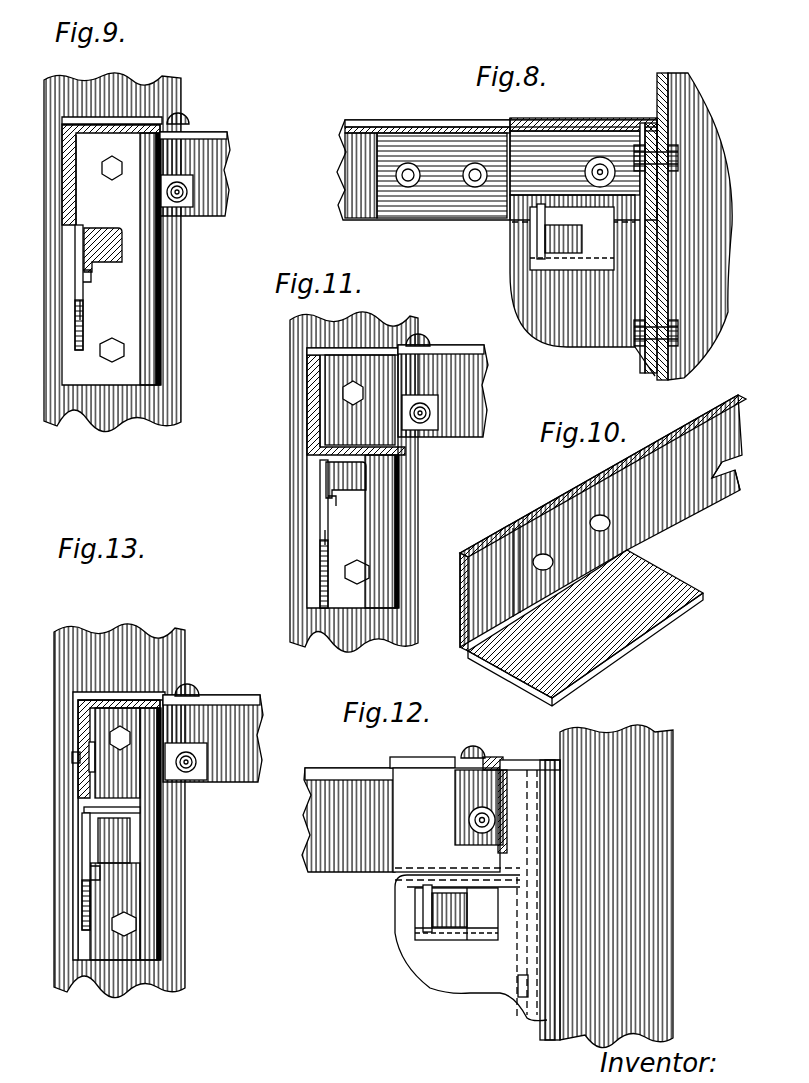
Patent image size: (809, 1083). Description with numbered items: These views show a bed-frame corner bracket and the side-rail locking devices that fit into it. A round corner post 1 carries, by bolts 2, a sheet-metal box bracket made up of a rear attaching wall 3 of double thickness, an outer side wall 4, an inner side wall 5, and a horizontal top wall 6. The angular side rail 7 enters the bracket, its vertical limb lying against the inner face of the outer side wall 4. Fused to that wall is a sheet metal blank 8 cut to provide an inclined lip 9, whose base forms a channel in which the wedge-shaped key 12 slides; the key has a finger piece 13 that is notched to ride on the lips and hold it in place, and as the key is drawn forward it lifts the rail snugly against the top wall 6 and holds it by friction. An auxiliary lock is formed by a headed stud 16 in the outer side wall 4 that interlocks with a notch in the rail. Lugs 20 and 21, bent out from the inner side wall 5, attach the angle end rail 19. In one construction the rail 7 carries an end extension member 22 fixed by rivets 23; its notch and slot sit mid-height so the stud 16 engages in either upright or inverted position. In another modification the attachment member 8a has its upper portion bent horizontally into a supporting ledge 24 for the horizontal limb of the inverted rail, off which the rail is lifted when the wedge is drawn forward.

In FIG. 9, the corner post 1 is at (50, 318).
In FIG. 8, the corner post 1 is at (690, 195).
In FIG. 11, the corner post 1 is at (302, 524).
In FIG. 13, the corner post 1 is at (58, 678).
In FIG. 12, the corner post 1 is at (628, 812).
In FIG. 9, the bolts 2 is at (113, 176).
In FIG. 8, the bolts 2 is at (656, 245).
In FIG. 11, the bolts 2 is at (354, 380).
In FIG. 13, the bolts 2 is at (120, 750).
In FIG. 9, the rear attaching wall 3 is at (130, 297).
In FIG. 8, the rear attaching wall 3 is at (650, 272).
In FIG. 11, the rear attaching wall 3 is at (372, 505).
In FIG. 13, the rear attaching wall 3 is at (142, 900).
In FIG. 12, the rear attaching wall 3 is at (526, 905).
In FIG. 9, the outer side wall 4 is at (74, 283).
In FIG. 11, the outer side wall 4 is at (318, 498).
In FIG. 13, the outer side wall 4 is at (84, 860).
In FIG. 12, the outer side wall 4 is at (446, 820).
In FIG. 9, the inner side wall 5 is at (160, 262).
In FIG. 8, the inner side wall 5 is at (640, 348).
In FIG. 11, the inner side wall 5 is at (400, 527).
In FIG. 13, the inner side wall 5 is at (162, 868).
In FIG. 8, the horizontal top wall 6 is at (617, 118).
In FIG. 13, the horizontal top wall 6 is at (100, 692).
In FIG. 12, the horizontal top wall 6 is at (418, 757).
In FIG. 9, the side rail 7 is at (140, 125).
In FIG. 8, the side rail 7 is at (370, 121).
In FIG. 11, the side rail 7 is at (358, 404).
In FIG. 10, the side rail 7 is at (463, 648).
In FIG. 13, the side rail 7 is at (118, 700).
In FIG. 12, the side rail 7 is at (330, 770).
In FIG. 9, the sheet metal blank 8 is at (82, 305).
In FIG. 8, the sheet metal blank 8 is at (568, 300).
In FIG. 12, the sheet metal blank 8 is at (471, 948).
In FIG. 11, the attachment member 8a is at (326, 533).
In FIG. 9, the inclined lip 9 is at (90, 278).
In FIG. 8, the inclined lip 9 is at (560, 256).
In FIG. 11, the inclined lip 9 is at (334, 500).
In FIG. 13, the inclined lip 9 is at (102, 875).
In FIG. 8, the wedge-shaped key 12 is at (577, 240).
In FIG. 12, the wedge-shaped key 12 is at (455, 905).
In FIG. 9, the finger piece 13 is at (108, 252).
In FIG. 8, the finger piece 13 is at (537, 235).
In FIG. 11, the finger piece 13 is at (350, 470).
In FIG. 13, the finger piece 13 is at (122, 843).
In FIG. 12, the finger piece 13 is at (428, 908).
In FIG. 9, the headed stud 16 is at (72, 165).
In FIG. 8, the headed stud 16 is at (592, 160).
In FIG. 11, the headed stud 16 is at (312, 388).
In FIG. 13, the headed stud 16 is at (82, 783).
In FIG. 12, the headed stud 16 is at (492, 765).
In FIG. 9, the angle end rail 19 is at (212, 135).
In FIG. 11, the angle end rail 19 is at (460, 385).
In FIG. 13, the angle end rail 19 is at (224, 718).
In FIG. 12, the angle end rail 19 is at (510, 760).
In FIG. 9, the horizontal attachment lug 20 is at (188, 122).
In FIG. 8, the horizontal attachment lug 20 is at (600, 172).
In FIG. 11, the horizontal attachment lug 20 is at (428, 350).
In FIG. 13, the horizontal attachment lug 20 is at (200, 690).
In FIG. 12, the horizontal attachment lug 20 is at (466, 750).
In FIG. 9, the vertical attachment lug 21 is at (197, 208).
In FIG. 11, the vertical attachment lug 21 is at (442, 437).
In FIG. 13, the vertical attachment lug 21 is at (208, 778).
In FIG. 12, the vertical attachment lug 21 is at (494, 838).
In FIG. 9, the end extension member 22 is at (72, 208).
In FIG. 8, the end extension member 22 is at (438, 218).
In FIG. 11, the end extension member 22 is at (312, 432).
In FIG. 10, the end extension member 22 is at (676, 515).
In FIG. 8, the rivets 23 is at (470, 162).
In FIG. 10, the rivets 23 is at (543, 552).
In FIG. 13, the supporting ledge 24 is at (136, 808).
In FIG. 12, the supporting ledge 24 is at (452, 874).